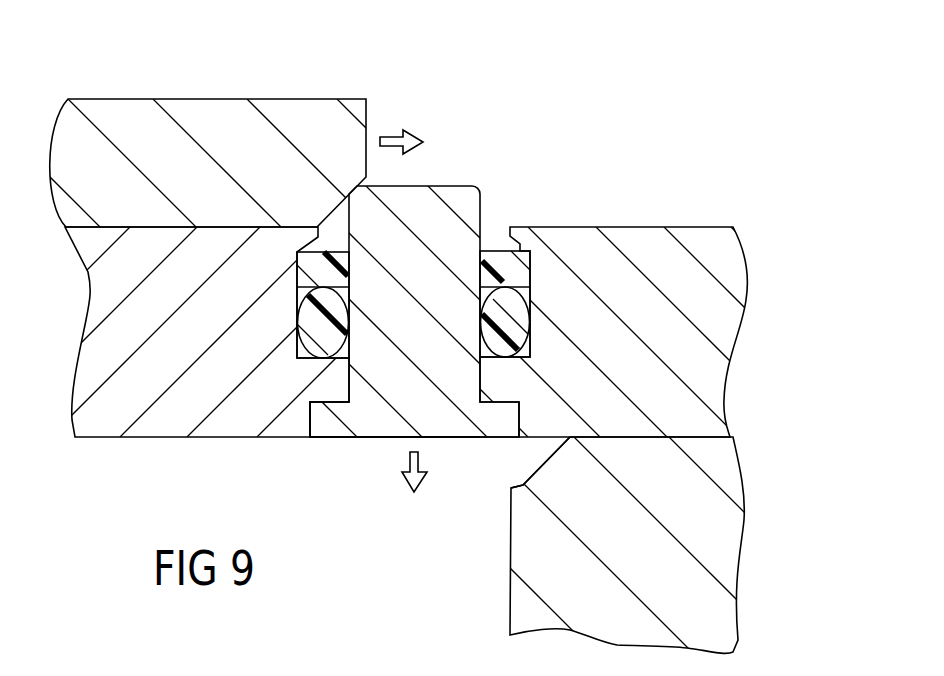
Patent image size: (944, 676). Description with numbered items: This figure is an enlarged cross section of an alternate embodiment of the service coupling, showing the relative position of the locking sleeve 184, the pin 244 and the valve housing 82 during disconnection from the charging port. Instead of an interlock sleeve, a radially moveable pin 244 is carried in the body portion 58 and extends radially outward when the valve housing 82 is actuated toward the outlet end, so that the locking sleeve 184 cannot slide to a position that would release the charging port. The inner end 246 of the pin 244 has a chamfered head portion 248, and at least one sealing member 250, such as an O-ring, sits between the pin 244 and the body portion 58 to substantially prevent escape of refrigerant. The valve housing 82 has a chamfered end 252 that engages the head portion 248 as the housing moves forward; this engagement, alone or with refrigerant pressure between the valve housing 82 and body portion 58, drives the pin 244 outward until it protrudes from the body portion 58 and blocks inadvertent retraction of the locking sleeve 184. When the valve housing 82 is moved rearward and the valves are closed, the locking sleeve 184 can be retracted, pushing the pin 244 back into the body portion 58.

The locking sleeve 184 is at (323, 112).
The radially moveable pin 244 is at (500, 182).
The chamfered head portion 248 is at (367, 422).
The inner end 246 is at (448, 440).
The sealing member 250 is at (517, 317).
The body portion 58 is at (720, 272).
The valve housing 82 is at (713, 536).
The chamfered end 252 is at (524, 485).